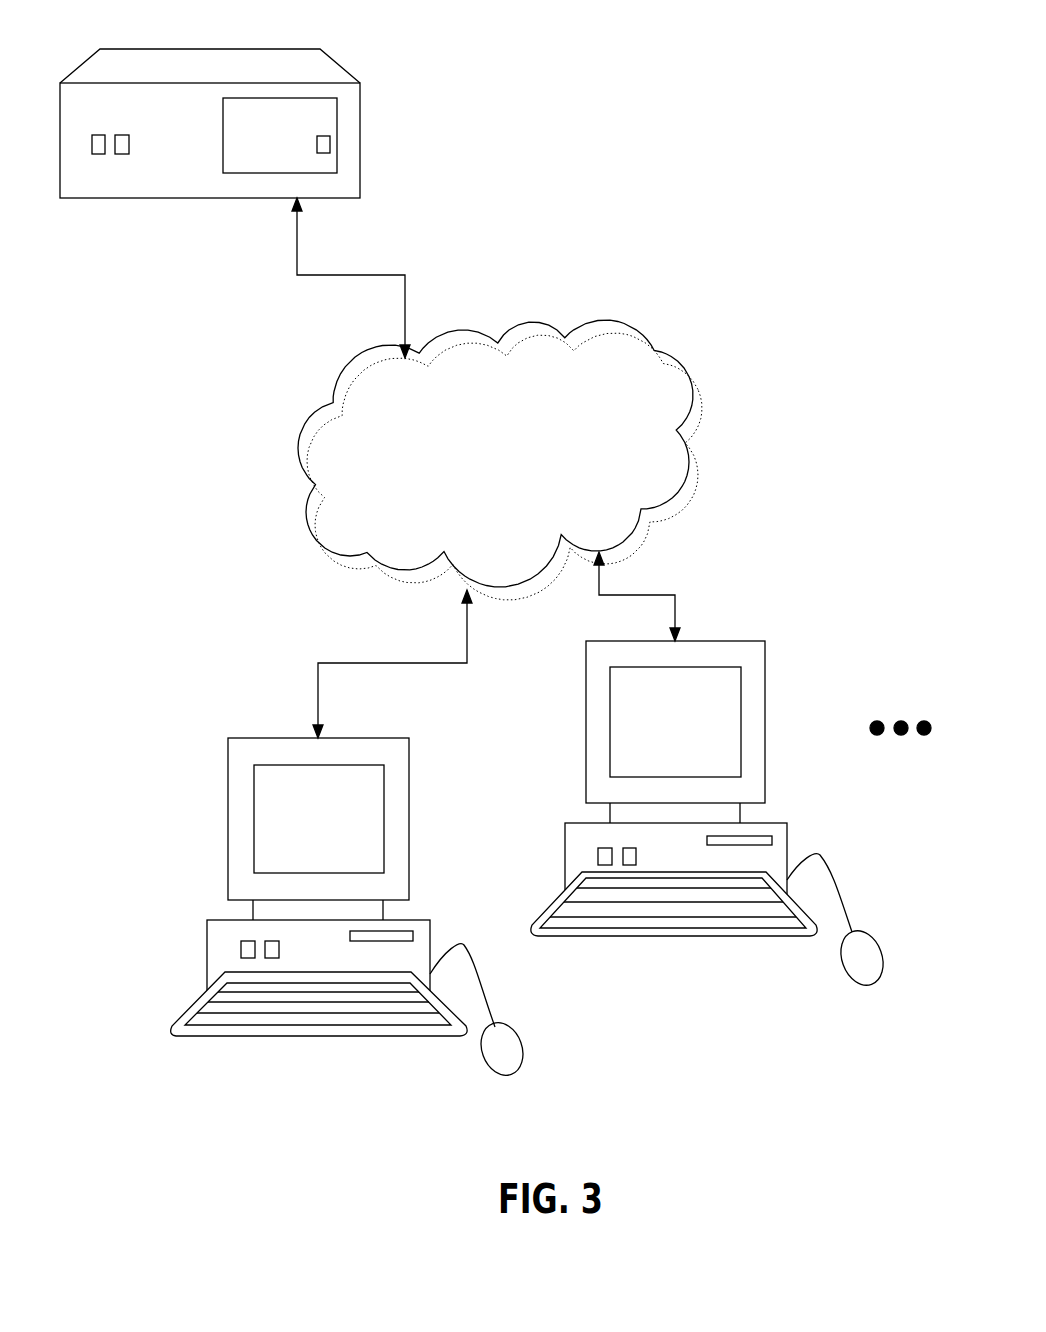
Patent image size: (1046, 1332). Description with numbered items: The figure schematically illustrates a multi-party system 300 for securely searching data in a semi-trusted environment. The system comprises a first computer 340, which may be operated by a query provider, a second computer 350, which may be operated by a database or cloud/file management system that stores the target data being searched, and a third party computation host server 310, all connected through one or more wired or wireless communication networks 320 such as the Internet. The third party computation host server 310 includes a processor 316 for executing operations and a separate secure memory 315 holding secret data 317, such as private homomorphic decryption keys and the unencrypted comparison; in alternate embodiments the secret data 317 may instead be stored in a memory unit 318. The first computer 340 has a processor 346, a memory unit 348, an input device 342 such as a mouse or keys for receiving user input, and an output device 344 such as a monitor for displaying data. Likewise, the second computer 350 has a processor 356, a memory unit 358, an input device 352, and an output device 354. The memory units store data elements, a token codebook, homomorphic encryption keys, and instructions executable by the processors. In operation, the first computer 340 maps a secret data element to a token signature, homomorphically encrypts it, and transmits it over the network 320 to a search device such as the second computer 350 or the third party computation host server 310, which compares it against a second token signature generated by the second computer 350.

The multi-party system 300 is at (779, 204).
The third party computation host server 310 is at (227, 73).
The secure memory 315 is at (283, 140).
The processor 316 is at (98, 155).
The secret data 317 is at (324, 154).
The memory unit 318 is at (122, 135).
The communication network 320 is at (522, 524).
The first computer 340 is at (280, 735).
The input device 342 is at (505, 1027).
The output device 344 is at (357, 813).
The processor 346 is at (236, 947).
The memory unit 348 is at (266, 941).
The second computer 350 is at (759, 640).
The input device 352 is at (870, 937).
The output device 354 is at (715, 720).
The processor 356 is at (597, 857).
The memory unit 358 is at (628, 848).